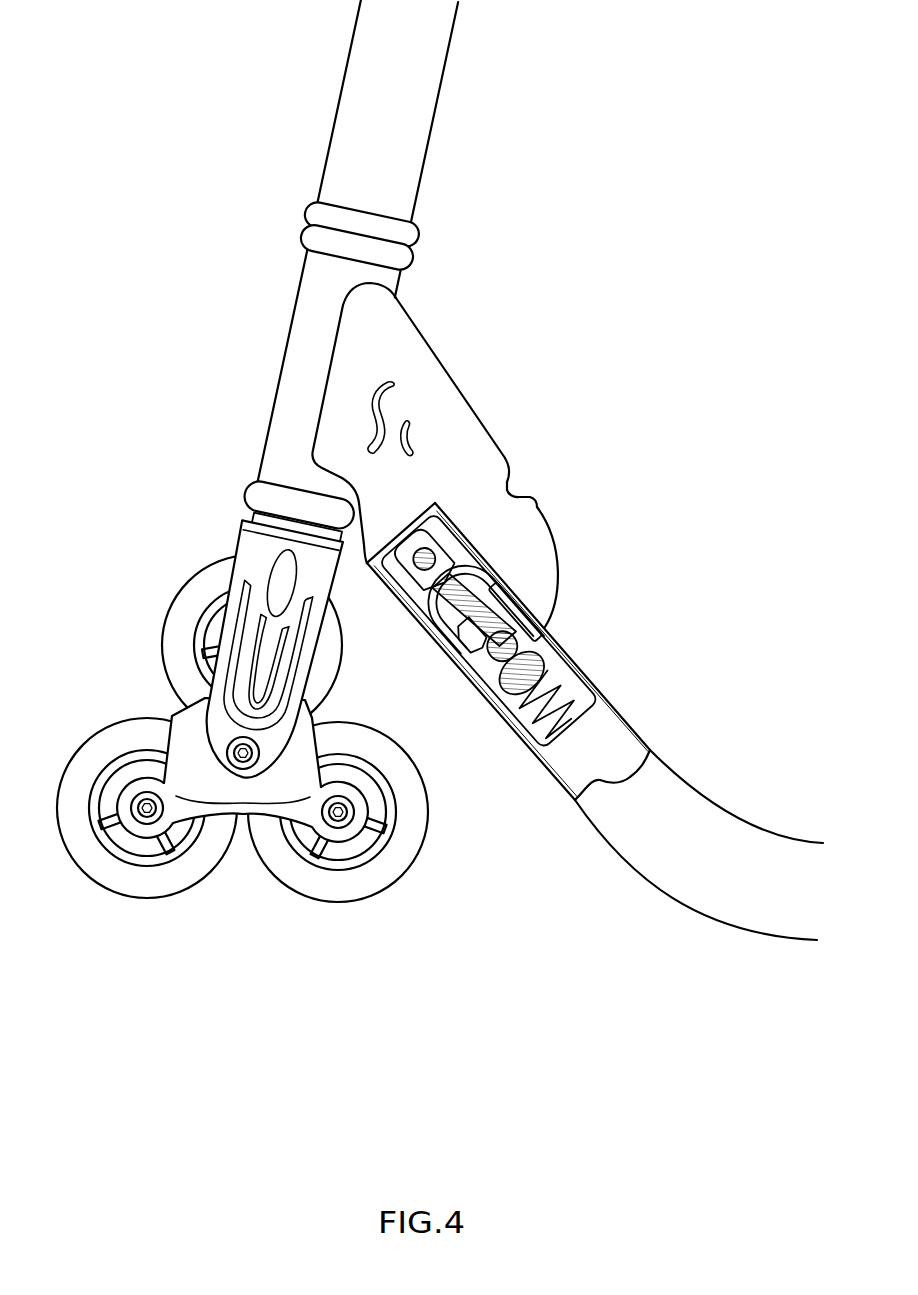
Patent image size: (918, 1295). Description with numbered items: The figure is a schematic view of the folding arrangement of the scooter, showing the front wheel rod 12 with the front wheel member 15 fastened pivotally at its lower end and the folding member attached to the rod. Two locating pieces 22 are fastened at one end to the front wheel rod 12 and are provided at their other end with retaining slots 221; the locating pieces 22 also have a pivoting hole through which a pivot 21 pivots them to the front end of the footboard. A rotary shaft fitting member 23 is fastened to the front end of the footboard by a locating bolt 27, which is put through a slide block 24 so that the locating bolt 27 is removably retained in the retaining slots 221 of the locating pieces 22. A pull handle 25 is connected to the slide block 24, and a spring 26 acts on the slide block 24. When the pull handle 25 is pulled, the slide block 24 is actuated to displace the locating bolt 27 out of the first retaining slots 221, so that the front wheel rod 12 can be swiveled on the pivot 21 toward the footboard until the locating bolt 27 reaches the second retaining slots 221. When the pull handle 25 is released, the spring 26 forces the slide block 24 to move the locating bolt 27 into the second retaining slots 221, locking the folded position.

The front wheel rod 12 is at (265, 197).
The front wheel member 15 is at (98, 657).
The pivot 21 is at (427, 553).
The locating pieces 22 is at (428, 368).
The retaining slots 221 is at (522, 495).
The rotary shaft fitting member 23 is at (567, 680).
The slide block 24 is at (462, 598).
The pull handle 25 is at (460, 670).
The spring 26 is at (548, 720).
The locating bolt 27 is at (500, 657).